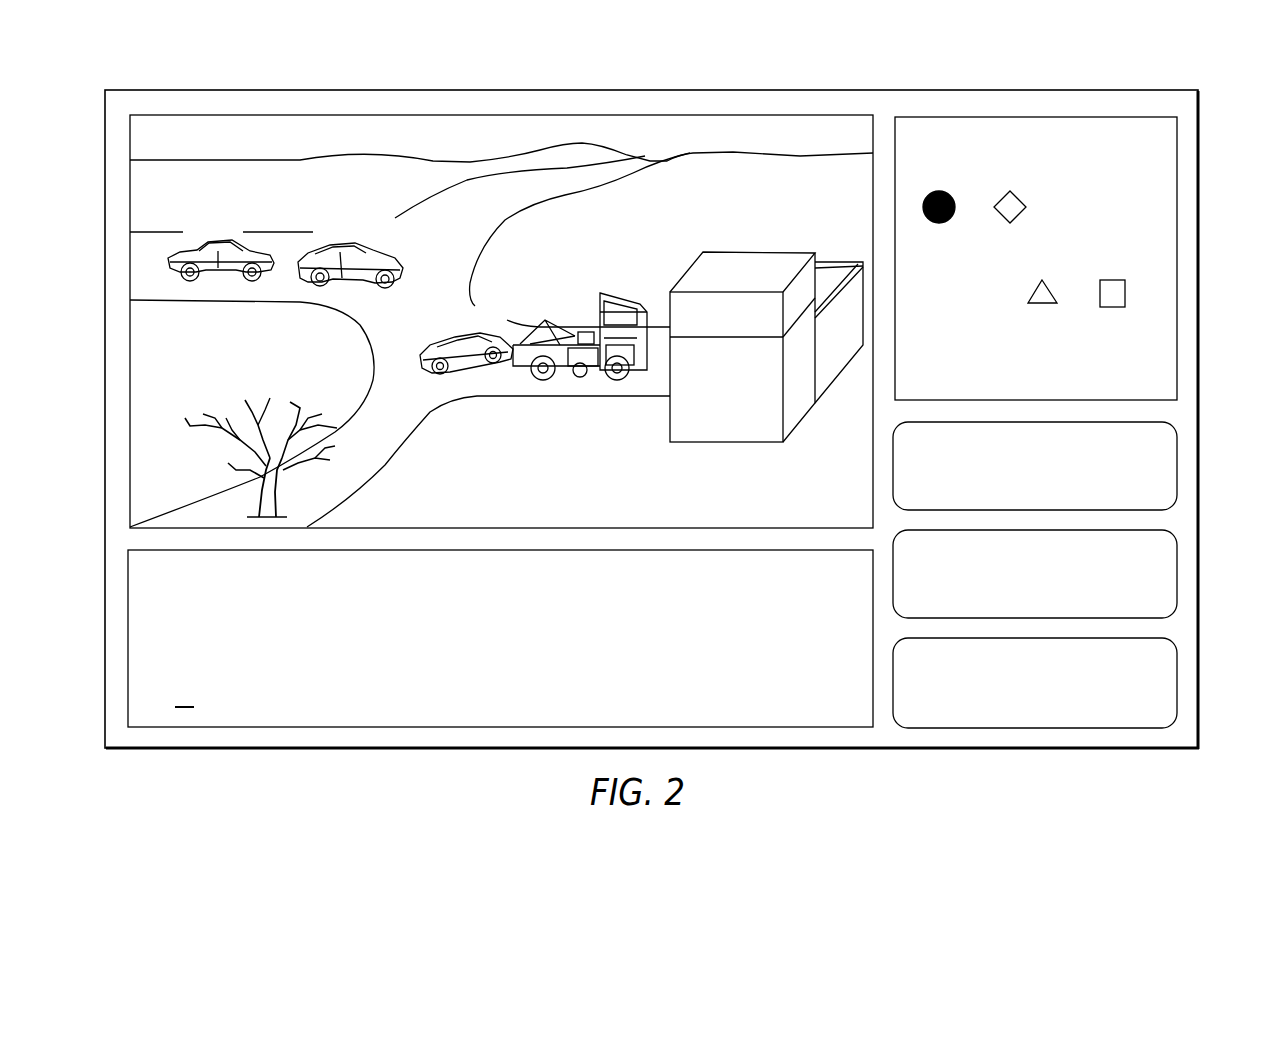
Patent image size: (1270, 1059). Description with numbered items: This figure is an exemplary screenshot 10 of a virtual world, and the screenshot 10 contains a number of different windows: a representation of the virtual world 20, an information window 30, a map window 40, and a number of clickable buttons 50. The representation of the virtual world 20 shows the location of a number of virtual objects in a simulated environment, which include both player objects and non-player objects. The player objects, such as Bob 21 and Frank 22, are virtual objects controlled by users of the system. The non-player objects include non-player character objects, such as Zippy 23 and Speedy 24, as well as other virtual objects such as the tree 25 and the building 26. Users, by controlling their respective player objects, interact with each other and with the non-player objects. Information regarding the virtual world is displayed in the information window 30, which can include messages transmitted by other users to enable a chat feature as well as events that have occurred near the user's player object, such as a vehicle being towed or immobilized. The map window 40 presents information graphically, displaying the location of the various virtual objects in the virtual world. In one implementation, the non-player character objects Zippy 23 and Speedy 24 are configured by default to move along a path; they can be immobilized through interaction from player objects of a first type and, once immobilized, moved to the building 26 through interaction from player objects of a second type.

The screenshot 10 is at (206, 76).
The representation of the virtual world 20 is at (501, 290).
The Bob 21 is at (183, 246).
The Frank 22 is at (603, 370).
The Zippy 23 is at (318, 252).
The Speedy 24 is at (460, 360).
The tree 25 is at (252, 492).
The building 26 is at (700, 293).
The information window 30 is at (326, 728).
The map window 40 is at (975, 114).
The clickable buttons 50 is at (1177, 480).